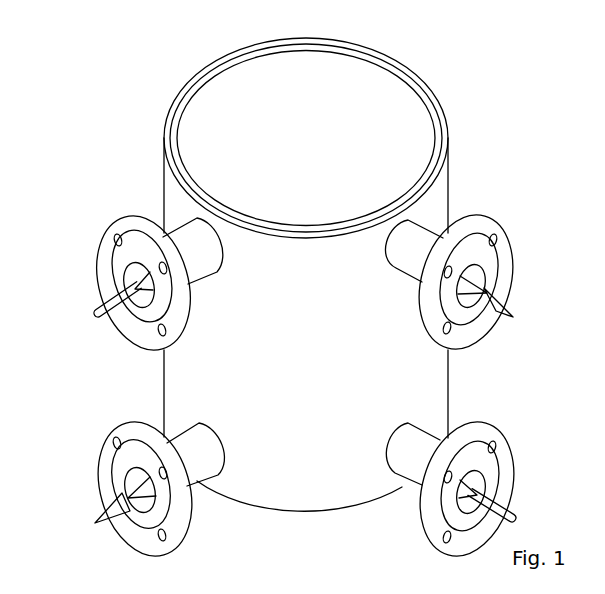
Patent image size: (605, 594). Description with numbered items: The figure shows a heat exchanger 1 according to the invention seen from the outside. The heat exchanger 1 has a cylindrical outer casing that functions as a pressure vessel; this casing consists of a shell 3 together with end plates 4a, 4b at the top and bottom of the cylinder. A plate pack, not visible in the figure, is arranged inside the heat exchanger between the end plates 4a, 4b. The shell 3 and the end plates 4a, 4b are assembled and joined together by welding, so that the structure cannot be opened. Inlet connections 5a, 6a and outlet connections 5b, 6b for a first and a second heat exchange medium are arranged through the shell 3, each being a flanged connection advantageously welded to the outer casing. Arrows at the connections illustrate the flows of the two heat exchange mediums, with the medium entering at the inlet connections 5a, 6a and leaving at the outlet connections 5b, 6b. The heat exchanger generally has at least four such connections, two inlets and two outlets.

The heat exchanger 1 is at (462, 61).
The shell 3 is at (418, 382).
The end plate 4a is at (208, 118).
The end plate 4b is at (263, 519).
The inlet connection 5a is at (125, 265).
The outlet connection 5b is at (125, 466).
The inlet connection 6a is at (485, 458).
The outlet connection 6b is at (485, 260).